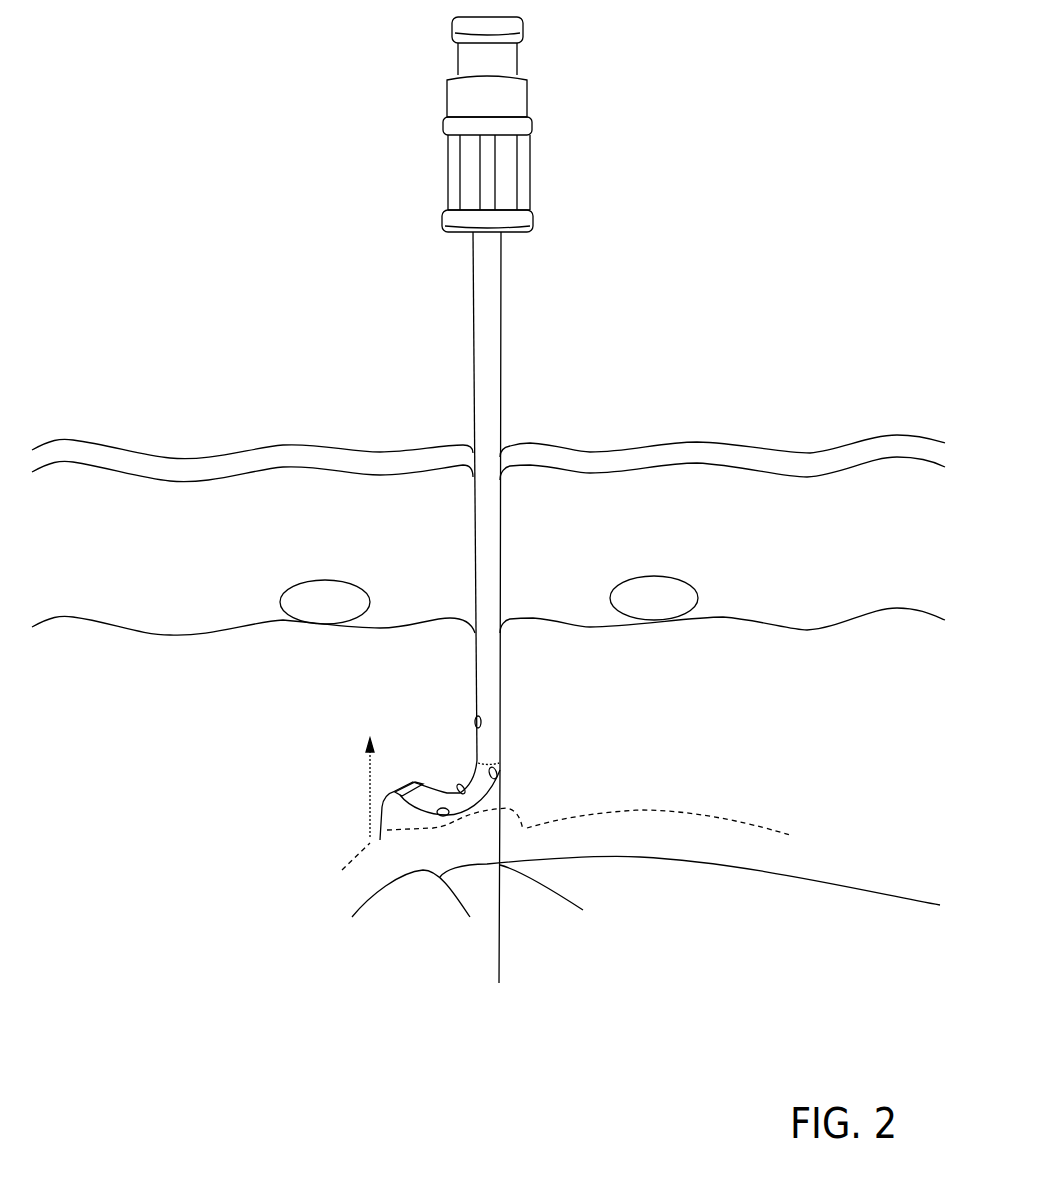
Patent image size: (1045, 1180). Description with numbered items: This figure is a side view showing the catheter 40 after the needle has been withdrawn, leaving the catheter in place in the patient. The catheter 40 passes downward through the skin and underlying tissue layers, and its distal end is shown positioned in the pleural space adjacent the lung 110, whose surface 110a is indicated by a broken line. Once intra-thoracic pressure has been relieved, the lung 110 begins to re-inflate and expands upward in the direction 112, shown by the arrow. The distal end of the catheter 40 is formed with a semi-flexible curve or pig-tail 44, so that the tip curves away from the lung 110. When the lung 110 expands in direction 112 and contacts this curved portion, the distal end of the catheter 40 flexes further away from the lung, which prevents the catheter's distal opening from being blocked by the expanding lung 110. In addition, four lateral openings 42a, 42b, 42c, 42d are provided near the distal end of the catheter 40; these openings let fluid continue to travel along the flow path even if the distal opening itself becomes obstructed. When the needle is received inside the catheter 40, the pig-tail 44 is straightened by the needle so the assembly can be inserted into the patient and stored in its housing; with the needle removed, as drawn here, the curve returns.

The catheter 40 is at (435, 820).
The lateral opening 42a is at (475, 723).
The lateral opening 42b is at (498, 775).
The lateral opening 42c is at (459, 787).
The lateral opening 42d is at (445, 818).
The pig-tail 44 is at (462, 837).
The lung 110 is at (378, 908).
The tissue surface 110a is at (627, 830).
The direction 112 is at (367, 788).